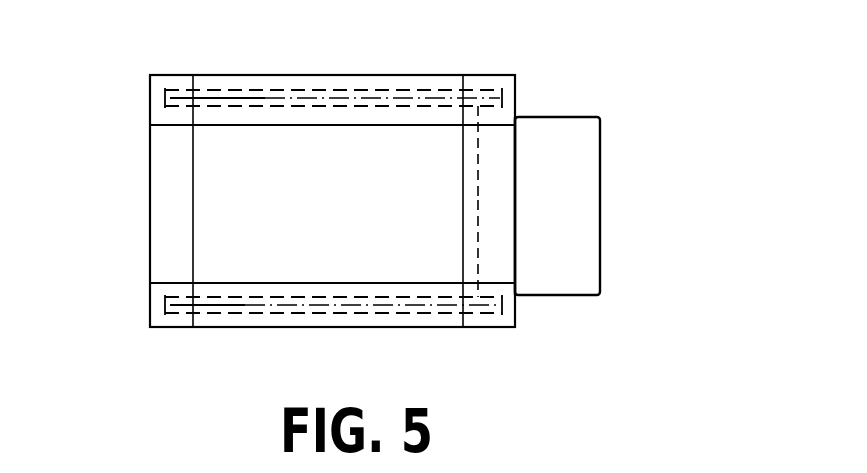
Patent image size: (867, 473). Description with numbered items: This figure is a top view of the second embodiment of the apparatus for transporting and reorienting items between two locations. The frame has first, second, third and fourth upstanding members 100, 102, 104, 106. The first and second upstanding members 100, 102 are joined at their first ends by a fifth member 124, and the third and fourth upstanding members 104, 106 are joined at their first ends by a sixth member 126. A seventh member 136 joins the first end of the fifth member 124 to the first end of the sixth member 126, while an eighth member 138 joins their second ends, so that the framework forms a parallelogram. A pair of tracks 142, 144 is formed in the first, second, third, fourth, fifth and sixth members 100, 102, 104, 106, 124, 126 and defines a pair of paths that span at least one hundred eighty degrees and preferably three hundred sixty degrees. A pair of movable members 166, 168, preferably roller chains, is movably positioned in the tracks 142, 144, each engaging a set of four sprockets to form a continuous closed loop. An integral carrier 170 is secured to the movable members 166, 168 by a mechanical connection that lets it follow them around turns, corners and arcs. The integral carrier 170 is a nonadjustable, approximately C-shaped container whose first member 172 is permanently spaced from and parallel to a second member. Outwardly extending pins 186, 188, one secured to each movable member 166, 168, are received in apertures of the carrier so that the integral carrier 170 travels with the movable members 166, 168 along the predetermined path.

The first upstanding member 100 is at (166, 291).
The second upstanding member 102 is at (492, 329).
The third upstanding member 104 is at (490, 85).
The fourth upstanding member 106 is at (166, 115).
The fifth member 124 is at (292, 328).
The sixth member 126 is at (290, 75).
The seventh member 136 is at (166, 210).
The eighth member 138 is at (500, 245).
The track 142 is at (248, 296).
The track 144 is at (268, 108).
The movable member 166 is at (372, 307).
The movable member 168 is at (369, 95).
The integral carrier 170 is at (645, 140).
The first member 172 is at (580, 215).
The pin 186 is at (486, 291).
The pin 188 is at (500, 104).